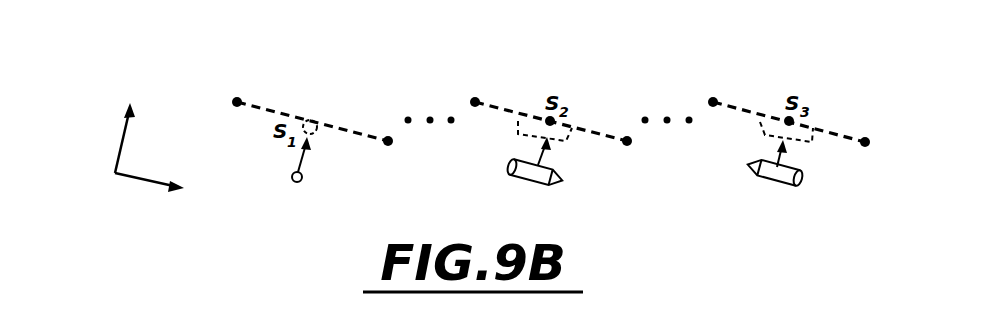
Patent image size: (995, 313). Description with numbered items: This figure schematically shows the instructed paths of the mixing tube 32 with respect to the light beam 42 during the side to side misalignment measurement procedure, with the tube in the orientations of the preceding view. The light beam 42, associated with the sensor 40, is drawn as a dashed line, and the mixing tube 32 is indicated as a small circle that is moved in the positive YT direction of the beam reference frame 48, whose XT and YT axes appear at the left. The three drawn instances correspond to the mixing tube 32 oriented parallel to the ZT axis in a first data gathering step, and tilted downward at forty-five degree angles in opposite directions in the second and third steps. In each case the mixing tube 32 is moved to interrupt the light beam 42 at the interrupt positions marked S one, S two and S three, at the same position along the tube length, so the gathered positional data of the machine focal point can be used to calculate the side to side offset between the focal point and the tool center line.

The beam reference frame 48 is at (119, 146).
The sensor 40 is at (390, 147).
The light beam 42 is at (342, 128).
The mixing tube 32 is at (298, 183).